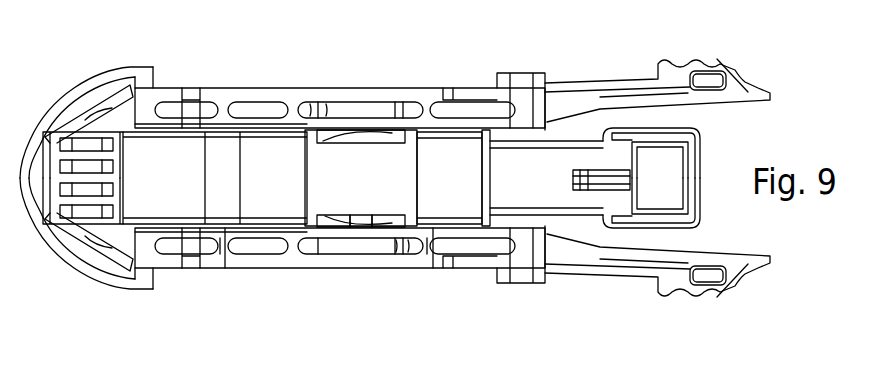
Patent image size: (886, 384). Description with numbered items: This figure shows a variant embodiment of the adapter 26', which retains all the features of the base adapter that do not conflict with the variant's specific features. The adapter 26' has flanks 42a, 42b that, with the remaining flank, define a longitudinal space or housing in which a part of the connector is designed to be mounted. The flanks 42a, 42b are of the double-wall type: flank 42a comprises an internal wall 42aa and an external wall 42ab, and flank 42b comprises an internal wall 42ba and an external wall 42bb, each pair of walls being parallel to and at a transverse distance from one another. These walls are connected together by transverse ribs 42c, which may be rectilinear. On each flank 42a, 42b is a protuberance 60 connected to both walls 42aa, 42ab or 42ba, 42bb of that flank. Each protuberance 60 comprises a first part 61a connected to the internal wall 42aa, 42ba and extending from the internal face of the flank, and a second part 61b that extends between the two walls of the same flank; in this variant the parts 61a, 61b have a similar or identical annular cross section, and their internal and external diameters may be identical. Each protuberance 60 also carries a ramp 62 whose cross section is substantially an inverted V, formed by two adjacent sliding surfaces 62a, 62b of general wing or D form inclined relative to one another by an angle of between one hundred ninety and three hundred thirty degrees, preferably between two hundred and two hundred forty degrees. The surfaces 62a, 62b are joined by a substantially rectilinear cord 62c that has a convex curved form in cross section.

The adapter 26' is at (797, 42).
The flank 42a is at (172, 87).
The internal wall 42aa is at (255, 117).
The external wall 42ab is at (203, 90).
The flank 42b is at (483, 268).
The internal wall 42ba is at (263, 266).
The external wall 42bb is at (203, 268).
The transverse rib 42c is at (222, 243).
The protuberance 60 is at (322, 215).
The first part 61a is at (398, 110).
The second part 61b is at (328, 110).
The ramp 62 is at (357, 245).
The sliding surface 62a is at (345, 266).
The sliding surface 62b is at (380, 268).
The cord 62c is at (363, 268).